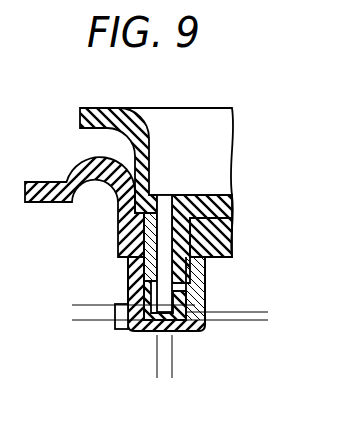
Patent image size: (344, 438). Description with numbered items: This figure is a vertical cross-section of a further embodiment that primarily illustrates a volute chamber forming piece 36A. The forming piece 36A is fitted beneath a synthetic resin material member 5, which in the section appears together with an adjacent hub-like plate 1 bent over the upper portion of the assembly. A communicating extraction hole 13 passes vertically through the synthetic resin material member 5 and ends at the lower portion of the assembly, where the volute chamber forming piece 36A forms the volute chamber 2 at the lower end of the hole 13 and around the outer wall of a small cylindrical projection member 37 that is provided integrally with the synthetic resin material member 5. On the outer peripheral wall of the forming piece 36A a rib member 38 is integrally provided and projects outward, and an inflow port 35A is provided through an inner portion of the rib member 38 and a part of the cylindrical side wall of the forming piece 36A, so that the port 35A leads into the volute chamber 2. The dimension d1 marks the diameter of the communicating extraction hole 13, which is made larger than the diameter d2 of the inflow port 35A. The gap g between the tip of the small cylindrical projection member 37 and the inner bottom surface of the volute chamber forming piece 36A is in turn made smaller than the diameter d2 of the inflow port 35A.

The hub plate 1 is at (95, 163).
The volute chamber 2 is at (193, 327).
The synthetic resin material member 5 is at (100, 108).
The communicating extraction hole 13 is at (163, 233).
The inflow port 35A is at (115, 312).
The volute chamber forming piece 36A is at (208, 280).
The small cylindrical projection member 37 is at (150, 297).
The rib member 38 is at (127, 329).
The diameter of the communicating extraction hole d1 is at (142, 372).
The diameter of the inflow port d2 is at (72, 294).
The gap g is at (258, 301).